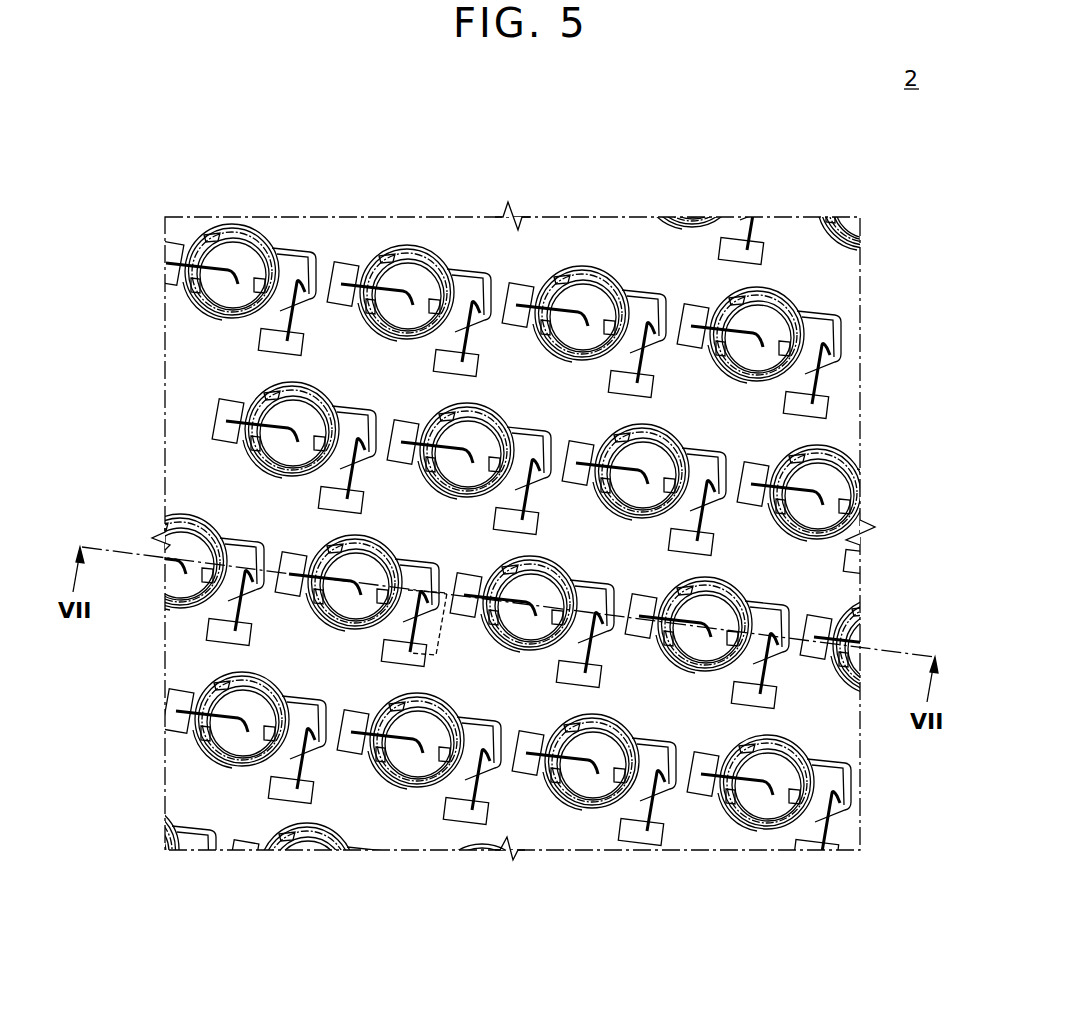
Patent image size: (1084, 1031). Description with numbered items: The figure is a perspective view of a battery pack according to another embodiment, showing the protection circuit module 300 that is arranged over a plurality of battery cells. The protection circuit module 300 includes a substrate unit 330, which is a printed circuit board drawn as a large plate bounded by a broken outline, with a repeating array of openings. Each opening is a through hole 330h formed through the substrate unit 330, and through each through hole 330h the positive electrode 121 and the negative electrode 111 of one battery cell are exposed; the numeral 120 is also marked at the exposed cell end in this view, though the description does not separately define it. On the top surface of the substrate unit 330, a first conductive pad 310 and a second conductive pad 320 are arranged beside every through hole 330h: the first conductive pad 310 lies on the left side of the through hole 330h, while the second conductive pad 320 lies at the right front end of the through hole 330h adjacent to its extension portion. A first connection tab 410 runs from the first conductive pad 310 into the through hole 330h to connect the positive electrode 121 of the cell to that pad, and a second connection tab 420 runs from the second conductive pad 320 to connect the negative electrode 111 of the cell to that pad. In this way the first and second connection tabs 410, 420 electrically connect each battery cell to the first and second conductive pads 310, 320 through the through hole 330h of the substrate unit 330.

The protection circuit module 300 is at (508, 550).
The substrate unit 330 is at (858, 418).
The through hole 330h is at (535, 221).
The light emitting element 120 is at (583, 238).
The positive electrode 121 is at (589, 252).
The negative electrode 111 is at (663, 248).
The first conductive pad 310 is at (409, 478).
The second conductive pad 320 is at (556, 530).
The first connection tab 410 is at (424, 412).
The second connection tab 420 is at (530, 443).